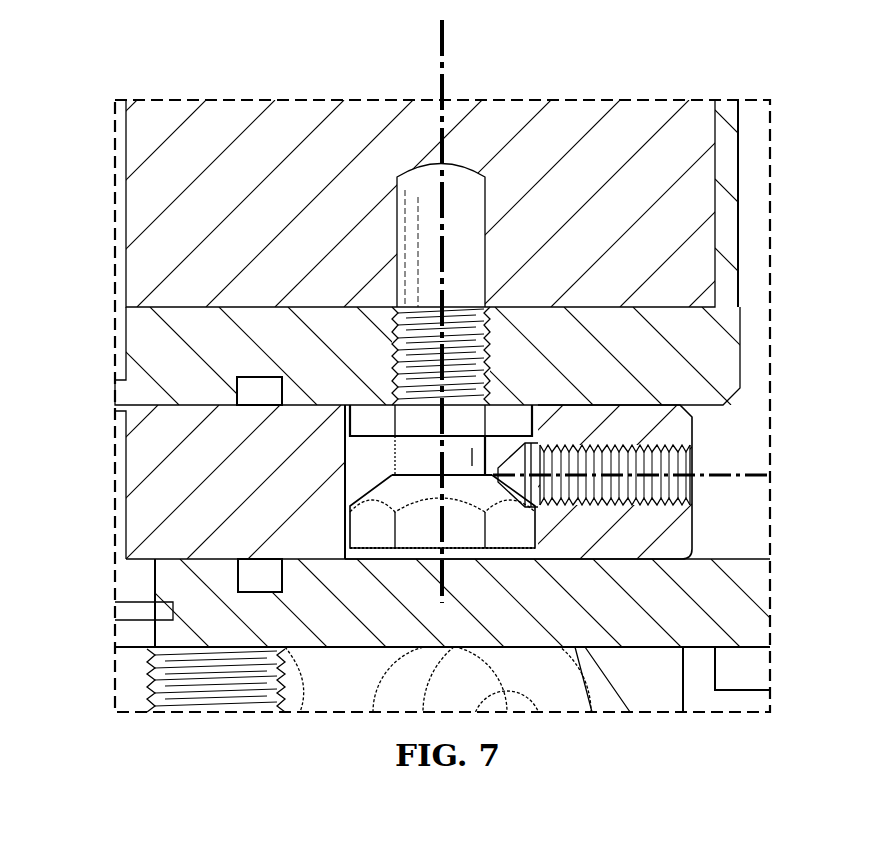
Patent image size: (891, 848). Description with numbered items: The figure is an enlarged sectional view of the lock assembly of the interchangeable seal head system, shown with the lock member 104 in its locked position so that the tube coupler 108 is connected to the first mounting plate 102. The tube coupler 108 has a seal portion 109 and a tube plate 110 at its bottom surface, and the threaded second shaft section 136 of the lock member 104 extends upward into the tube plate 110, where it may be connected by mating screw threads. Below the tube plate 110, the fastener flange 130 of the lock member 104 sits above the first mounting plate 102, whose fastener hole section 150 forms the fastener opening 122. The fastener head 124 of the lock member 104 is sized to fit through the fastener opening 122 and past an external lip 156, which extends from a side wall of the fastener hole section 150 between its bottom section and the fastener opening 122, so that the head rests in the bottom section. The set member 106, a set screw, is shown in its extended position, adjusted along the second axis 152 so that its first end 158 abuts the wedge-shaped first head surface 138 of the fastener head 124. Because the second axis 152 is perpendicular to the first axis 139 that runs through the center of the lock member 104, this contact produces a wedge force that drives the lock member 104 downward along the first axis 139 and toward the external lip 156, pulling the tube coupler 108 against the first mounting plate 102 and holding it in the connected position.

The first mounting plate 102 is at (697, 428).
The lock member 104 is at (382, 550).
The set member 106 is at (692, 468).
The tube coupler 108 is at (740, 150).
The seal portion 109 is at (233, 100).
The tube plate 110 is at (727, 357).
The fastener opening 122 is at (536, 399).
The fastener head 124 is at (126, 548).
The fastener flange 130 is at (126, 428).
The second shaft section 136 is at (392, 360).
The first head surface 138 is at (352, 490).
The first axis 139 is at (440, 40).
The fastener hole section 150 is at (515, 555).
The second axis 152 is at (748, 480).
The external lip 156 is at (348, 452).
The first end 158 is at (547, 438).